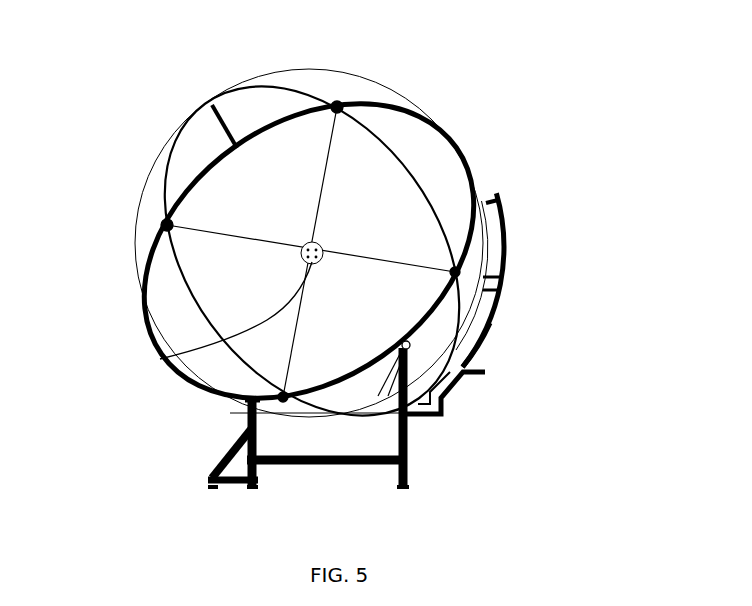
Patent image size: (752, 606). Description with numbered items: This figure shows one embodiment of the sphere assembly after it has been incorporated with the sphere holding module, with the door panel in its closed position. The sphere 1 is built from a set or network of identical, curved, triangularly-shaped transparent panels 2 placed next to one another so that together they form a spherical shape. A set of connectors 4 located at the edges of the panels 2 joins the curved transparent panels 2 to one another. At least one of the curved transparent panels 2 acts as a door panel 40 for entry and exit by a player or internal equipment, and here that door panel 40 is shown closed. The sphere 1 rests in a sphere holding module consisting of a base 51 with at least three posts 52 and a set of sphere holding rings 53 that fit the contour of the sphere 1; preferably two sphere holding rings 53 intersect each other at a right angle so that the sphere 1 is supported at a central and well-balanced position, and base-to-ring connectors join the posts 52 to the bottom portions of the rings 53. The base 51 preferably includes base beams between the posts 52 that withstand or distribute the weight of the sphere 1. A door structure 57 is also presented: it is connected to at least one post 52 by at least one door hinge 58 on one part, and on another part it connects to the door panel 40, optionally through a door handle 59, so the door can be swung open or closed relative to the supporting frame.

The sphere 1 is at (253, 80).
The curved transparent panel 2 is at (213, 252).
The connector 4 is at (160, 359).
The door panel 40 is at (487, 252).
The base 51 is at (330, 437).
The post 52 is at (410, 453).
The sphere holding ring 53 is at (150, 272).
The door structure 57 is at (495, 323).
The door hinge 58 is at (407, 418).
The door handle 59 is at (507, 292).